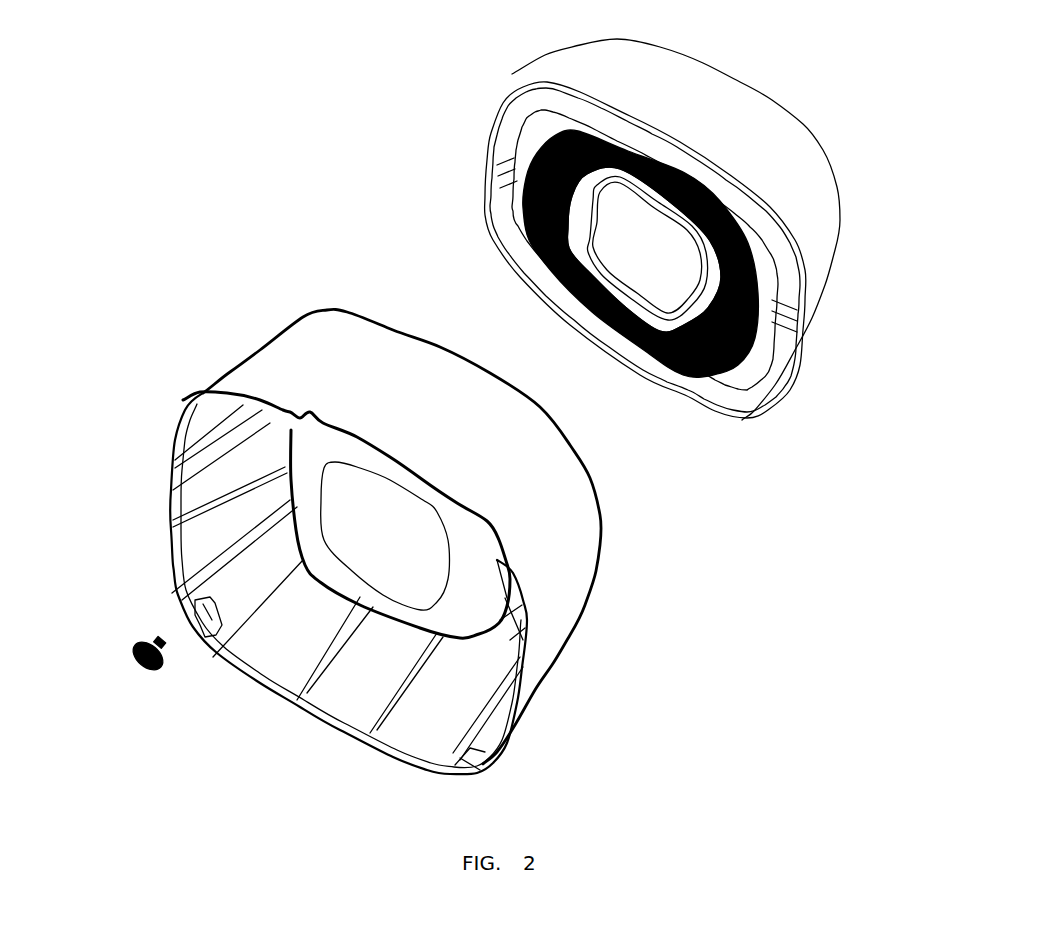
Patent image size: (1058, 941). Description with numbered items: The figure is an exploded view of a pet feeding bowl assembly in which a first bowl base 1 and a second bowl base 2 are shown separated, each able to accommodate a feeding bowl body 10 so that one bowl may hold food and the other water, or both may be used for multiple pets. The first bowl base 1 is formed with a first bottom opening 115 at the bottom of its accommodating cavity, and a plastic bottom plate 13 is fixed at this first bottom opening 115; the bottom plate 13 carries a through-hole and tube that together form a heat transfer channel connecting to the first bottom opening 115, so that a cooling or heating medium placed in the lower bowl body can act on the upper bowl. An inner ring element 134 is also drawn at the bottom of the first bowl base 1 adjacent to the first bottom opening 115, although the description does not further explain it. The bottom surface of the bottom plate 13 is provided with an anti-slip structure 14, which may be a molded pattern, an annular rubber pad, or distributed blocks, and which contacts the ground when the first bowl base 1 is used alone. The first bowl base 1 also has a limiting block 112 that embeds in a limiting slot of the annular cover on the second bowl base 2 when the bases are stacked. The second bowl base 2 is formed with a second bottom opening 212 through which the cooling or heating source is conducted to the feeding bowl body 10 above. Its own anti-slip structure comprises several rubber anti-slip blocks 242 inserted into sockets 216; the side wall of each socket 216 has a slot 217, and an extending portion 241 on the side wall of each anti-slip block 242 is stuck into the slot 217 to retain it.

The first bowl base 1 is at (817, 237).
The second bowl base 2 is at (547, 587).
The feeding bowl body 10 is at (645, 232).
The bottom plate 13 is at (517, 138).
The anti-slip structure 14 is at (523, 217).
The limiting block 112 is at (492, 262).
The first bottom opening 115 is at (762, 358).
The inner ring 134 is at (762, 298).
The second bottom opening 212 is at (522, 622).
The socket 216 is at (207, 640).
The slot 217 is at (167, 562).
The extending portion 241 is at (155, 633).
The anti-slip block 242 is at (137, 663).